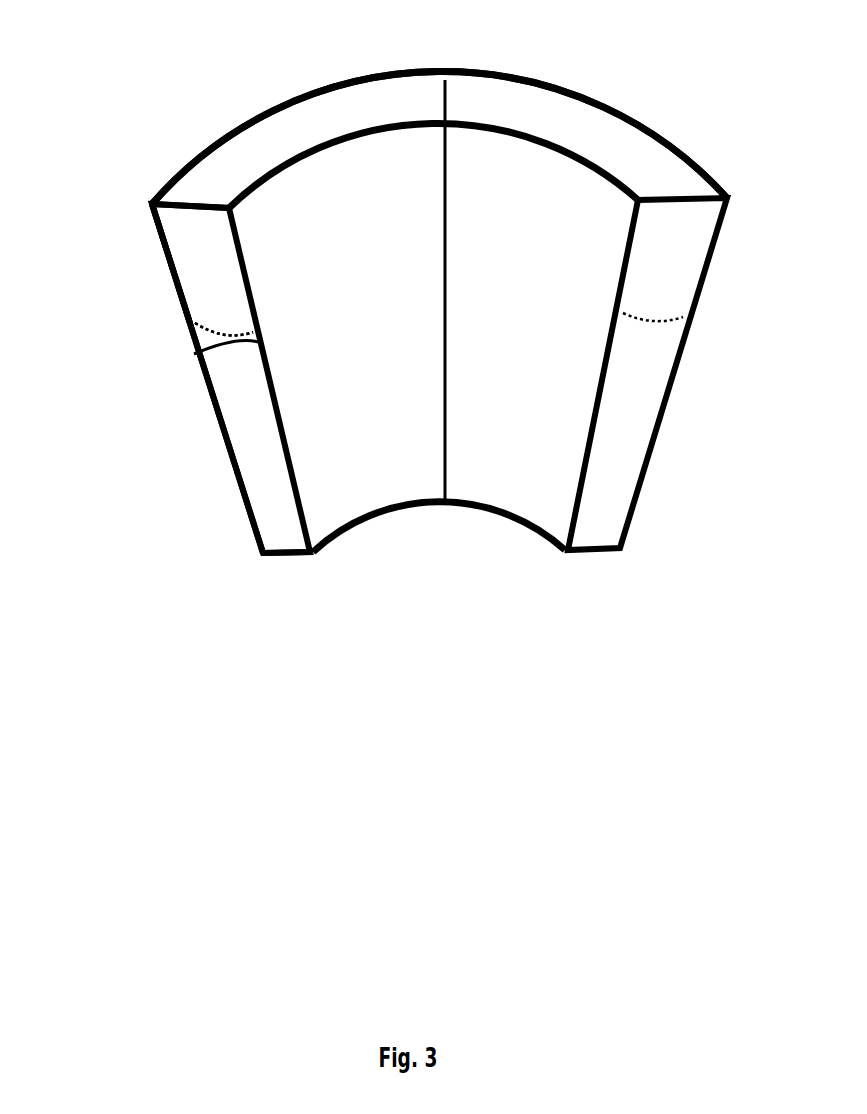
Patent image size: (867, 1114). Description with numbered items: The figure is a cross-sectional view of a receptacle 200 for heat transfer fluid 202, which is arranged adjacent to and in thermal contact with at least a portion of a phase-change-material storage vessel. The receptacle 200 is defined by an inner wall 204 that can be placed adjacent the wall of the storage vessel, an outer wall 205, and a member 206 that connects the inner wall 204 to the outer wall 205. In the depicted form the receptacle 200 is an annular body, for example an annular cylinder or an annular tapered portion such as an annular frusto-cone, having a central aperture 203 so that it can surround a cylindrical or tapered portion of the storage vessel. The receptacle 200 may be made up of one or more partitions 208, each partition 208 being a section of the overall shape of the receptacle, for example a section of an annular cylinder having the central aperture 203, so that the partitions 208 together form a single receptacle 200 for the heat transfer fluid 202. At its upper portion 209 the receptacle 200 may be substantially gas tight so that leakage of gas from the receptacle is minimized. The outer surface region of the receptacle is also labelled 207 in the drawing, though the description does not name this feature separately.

The receptacle for heat transfer fluid 200 is at (275, 103).
The heat transfer fluid 202 is at (227, 425).
The central aperture 203 is at (437, 565).
The inner wall 204 is at (194, 354).
The outer wall 205 is at (160, 252).
The member 206 is at (278, 560).
The outer arc surface 207 is at (590, 115).
The partition 208 is at (397, 97).
The upper portion 209 is at (138, 202).